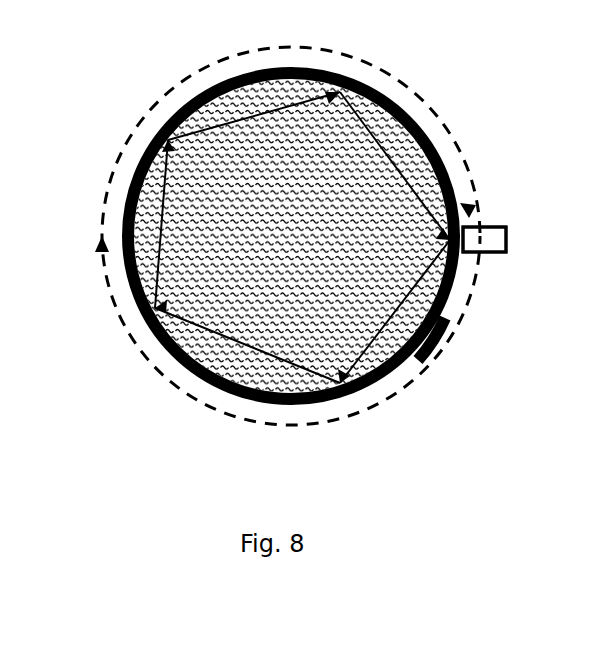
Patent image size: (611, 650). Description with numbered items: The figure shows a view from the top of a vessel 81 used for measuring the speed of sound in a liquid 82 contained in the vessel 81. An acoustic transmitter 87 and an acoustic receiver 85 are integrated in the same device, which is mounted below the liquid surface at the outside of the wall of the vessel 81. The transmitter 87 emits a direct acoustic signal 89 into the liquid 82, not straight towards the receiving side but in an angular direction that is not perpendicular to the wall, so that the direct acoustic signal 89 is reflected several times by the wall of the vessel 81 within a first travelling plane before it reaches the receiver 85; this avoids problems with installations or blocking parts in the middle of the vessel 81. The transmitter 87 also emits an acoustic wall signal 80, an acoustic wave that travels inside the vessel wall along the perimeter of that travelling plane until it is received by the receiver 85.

The acoustic wall signal 80 is at (372, 403).
The vessel 81 is at (163, 123).
The liquid 82 is at (420, 122).
The acoustic receiver 85 is at (484, 239).
The acoustic transmitter 87 is at (487, 243).
The direct acoustic signal 89 is at (433, 333).